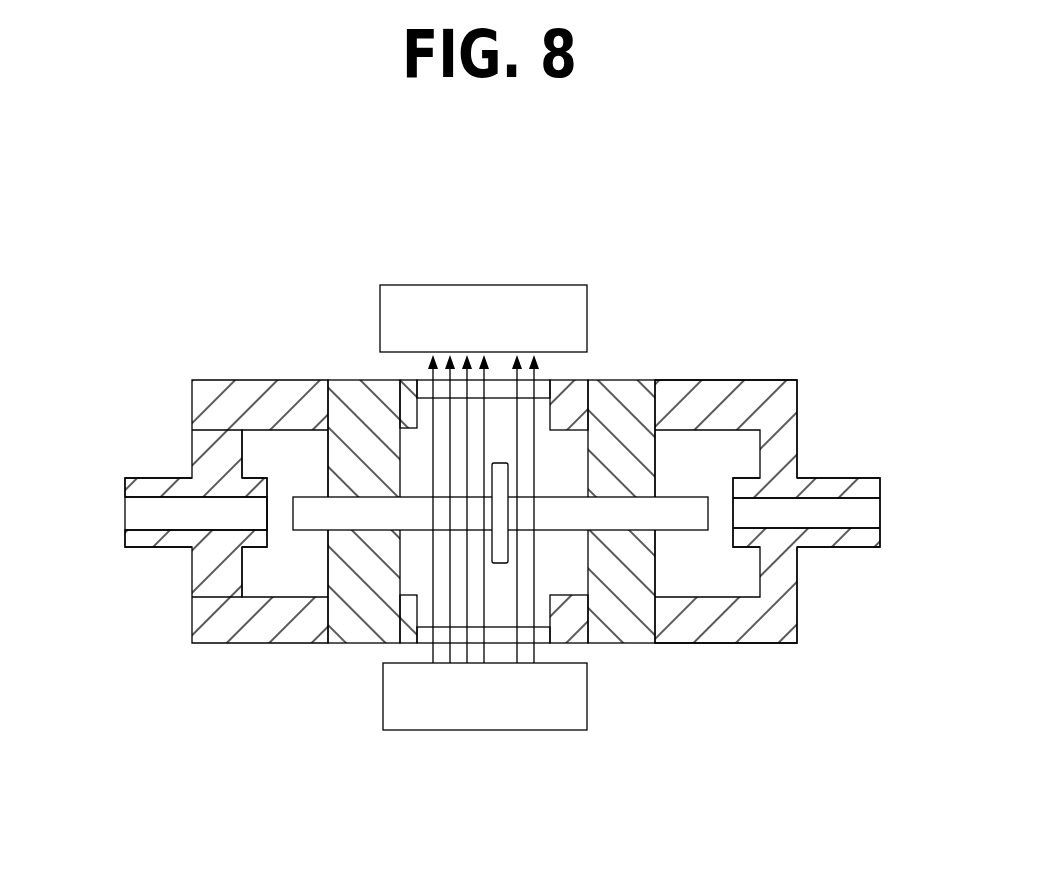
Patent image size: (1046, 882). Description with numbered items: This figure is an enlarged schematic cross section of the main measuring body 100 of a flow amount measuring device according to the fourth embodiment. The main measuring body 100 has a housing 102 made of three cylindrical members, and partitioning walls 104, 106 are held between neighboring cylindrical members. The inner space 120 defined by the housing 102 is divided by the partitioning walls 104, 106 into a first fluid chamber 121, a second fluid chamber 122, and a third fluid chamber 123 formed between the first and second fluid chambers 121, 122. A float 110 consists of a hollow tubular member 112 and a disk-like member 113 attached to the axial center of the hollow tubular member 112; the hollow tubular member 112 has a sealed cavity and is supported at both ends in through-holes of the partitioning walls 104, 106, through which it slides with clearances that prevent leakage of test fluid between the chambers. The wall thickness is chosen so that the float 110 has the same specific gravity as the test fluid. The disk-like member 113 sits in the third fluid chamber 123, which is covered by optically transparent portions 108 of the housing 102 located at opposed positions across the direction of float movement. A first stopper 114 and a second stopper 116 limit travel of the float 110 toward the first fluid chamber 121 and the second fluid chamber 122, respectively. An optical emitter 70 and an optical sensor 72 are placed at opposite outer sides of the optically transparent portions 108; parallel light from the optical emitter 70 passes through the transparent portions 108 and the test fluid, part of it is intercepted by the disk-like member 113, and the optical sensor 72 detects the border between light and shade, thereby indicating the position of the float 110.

The optical emitter 70 is at (507, 730).
The optical sensor 72 is at (547, 285).
The main measuring body 100 is at (772, 643).
The housing 102 is at (770, 385).
The partitioning wall 104 is at (370, 560).
The partitioning wall 106 is at (640, 563).
The optically transparent portions 108 is at (420, 384).
The float 110 is at (310, 493).
The hollow tubular member 112 is at (683, 513).
The disk-like member 113 is at (508, 480).
The first stopper 114 is at (257, 470).
The second stopper 116 is at (753, 483).
The inner space 120 is at (260, 572).
The first fluid chamber 121 is at (250, 462).
The second fluid chamber 122 is at (748, 567).
The third fluid chamber 123 is at (565, 575).